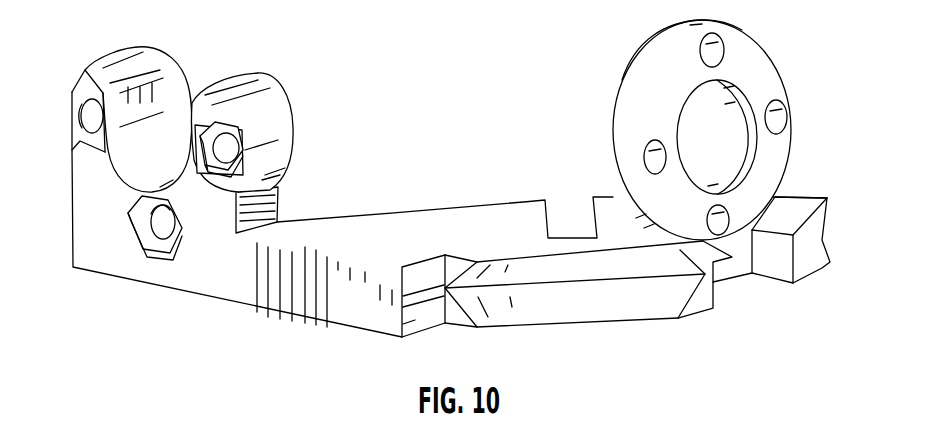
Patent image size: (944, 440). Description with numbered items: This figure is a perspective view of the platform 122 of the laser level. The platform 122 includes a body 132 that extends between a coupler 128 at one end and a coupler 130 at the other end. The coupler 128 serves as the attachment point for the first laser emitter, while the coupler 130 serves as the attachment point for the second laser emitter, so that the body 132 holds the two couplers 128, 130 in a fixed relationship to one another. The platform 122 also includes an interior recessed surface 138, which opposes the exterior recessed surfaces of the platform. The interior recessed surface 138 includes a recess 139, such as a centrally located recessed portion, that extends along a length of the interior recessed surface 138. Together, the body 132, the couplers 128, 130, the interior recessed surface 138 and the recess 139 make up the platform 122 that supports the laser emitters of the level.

The platform 122 is at (366, 88).
The coupler 128 is at (82, 70).
The coupler 130 is at (782, 40).
The body 132 is at (487, 217).
The interior recessed surface 138 is at (647, 298).
The recess 139 is at (560, 293).